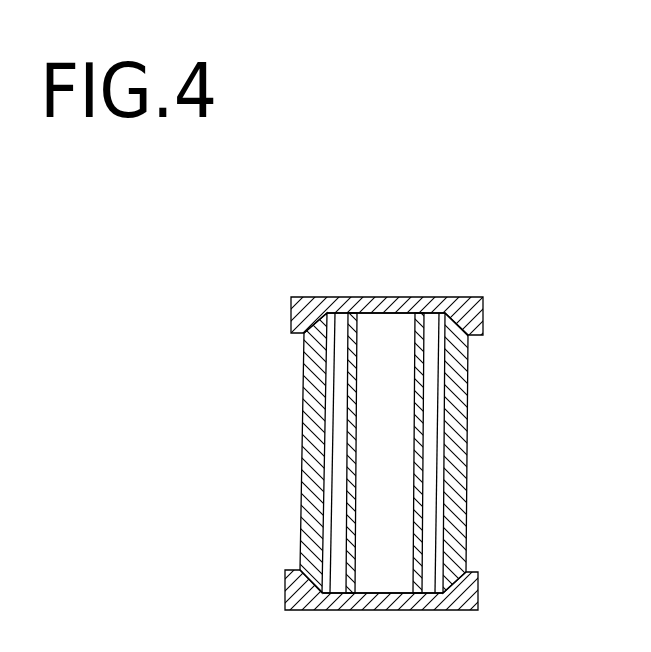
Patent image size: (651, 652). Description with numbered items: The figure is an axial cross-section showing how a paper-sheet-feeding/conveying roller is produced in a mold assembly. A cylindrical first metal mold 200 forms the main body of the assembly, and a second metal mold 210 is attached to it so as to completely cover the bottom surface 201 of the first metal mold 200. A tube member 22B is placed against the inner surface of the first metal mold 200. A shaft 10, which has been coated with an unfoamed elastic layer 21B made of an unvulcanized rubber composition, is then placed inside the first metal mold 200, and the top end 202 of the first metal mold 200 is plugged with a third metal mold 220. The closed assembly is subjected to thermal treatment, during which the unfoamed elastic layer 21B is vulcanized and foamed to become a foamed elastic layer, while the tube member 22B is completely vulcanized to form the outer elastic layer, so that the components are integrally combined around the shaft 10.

The shaft 10 is at (397, 327).
The unfoamed elastic layer 21B is at (353, 313).
The tube member 22B is at (440, 313).
The first metal mold 200 is at (468, 383).
The bottom surface 201 is at (370, 593).
The top end 202 is at (367, 313).
The second metal mold 210 is at (467, 590).
The third metal mold 220 is at (483, 307).